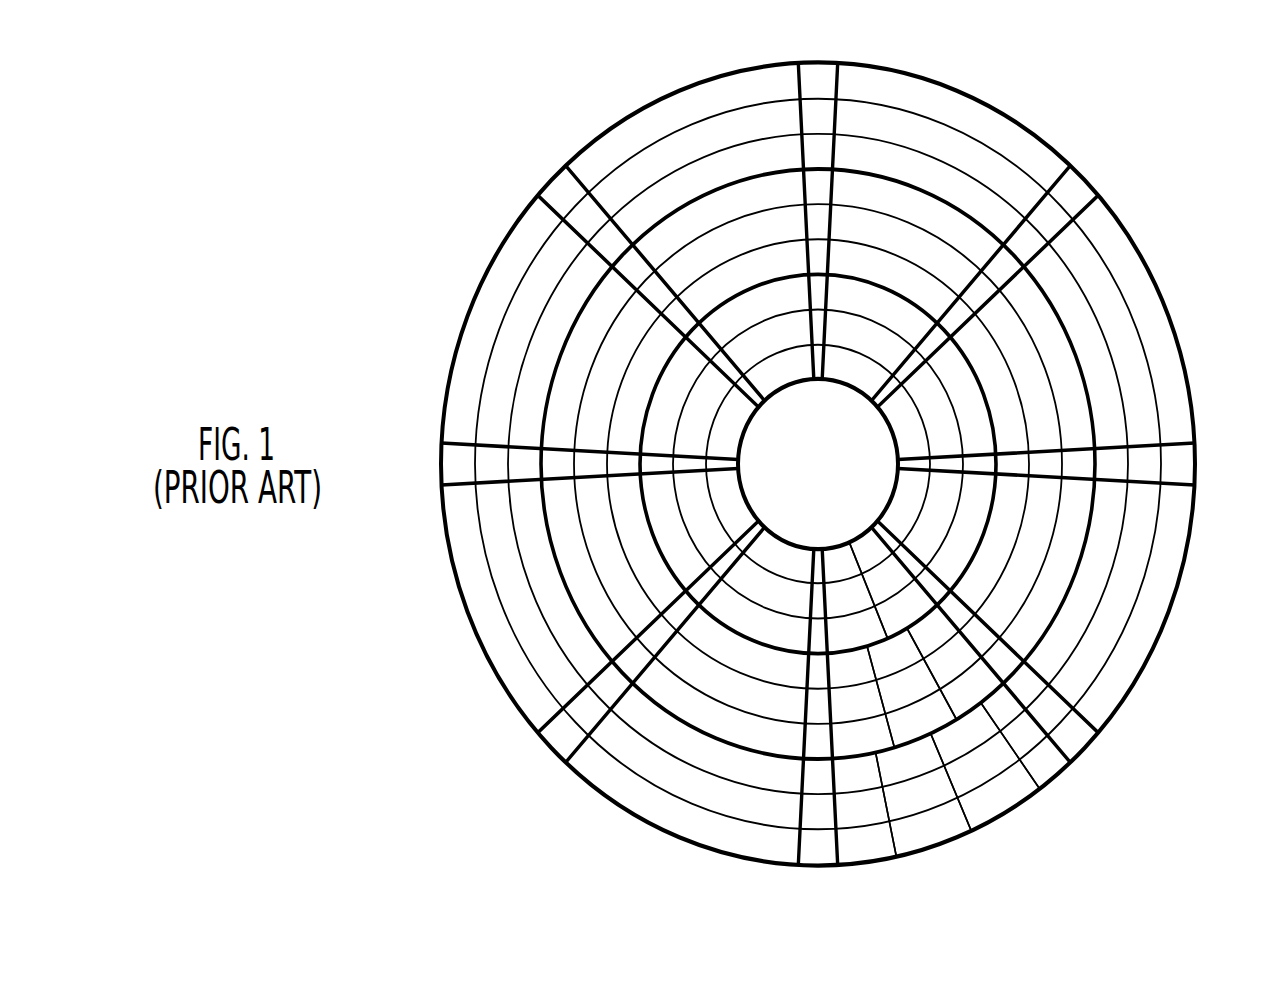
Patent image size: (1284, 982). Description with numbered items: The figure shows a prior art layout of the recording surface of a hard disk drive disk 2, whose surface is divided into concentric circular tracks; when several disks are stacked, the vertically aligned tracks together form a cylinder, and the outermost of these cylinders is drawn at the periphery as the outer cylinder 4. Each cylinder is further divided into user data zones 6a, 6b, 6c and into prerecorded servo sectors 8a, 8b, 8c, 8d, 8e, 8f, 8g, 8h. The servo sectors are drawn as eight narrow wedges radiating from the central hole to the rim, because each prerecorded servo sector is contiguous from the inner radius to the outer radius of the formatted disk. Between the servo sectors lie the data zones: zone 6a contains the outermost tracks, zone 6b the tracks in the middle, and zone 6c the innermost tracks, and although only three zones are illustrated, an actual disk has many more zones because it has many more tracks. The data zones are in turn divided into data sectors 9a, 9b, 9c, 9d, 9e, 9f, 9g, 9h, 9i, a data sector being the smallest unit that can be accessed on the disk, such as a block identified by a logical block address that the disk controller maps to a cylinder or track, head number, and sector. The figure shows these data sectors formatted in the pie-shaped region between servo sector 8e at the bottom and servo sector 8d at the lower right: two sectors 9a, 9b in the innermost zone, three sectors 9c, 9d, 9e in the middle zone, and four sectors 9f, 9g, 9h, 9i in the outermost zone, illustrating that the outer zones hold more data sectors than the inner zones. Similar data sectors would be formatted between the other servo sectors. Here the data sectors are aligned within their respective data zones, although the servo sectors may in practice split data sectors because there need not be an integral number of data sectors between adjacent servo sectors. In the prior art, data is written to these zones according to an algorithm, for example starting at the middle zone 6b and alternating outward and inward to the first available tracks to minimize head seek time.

The disk 2 is at (588, 92).
The outer cylinder 4 is at (700, 80).
The user data zone 6a is at (882, 128).
The user data zone 6b is at (892, 240).
The user data zone 6c is at (873, 345).
The prerecorded servo sector 8a is at (808, 62).
The prerecorded servo sector 8b is at (1088, 178).
The prerecorded servo sector 8c is at (1196, 463).
The prerecorded servo sector 8d is at (1088, 750).
The prerecorded servo sector 8e is at (820, 868).
The prerecorded servo sector 8f is at (550, 750).
The prerecorded servo sector 8g is at (440, 466).
The prerecorded servo sector 8h is at (550, 175).
The data sector 9a is at (861, 613).
The data sector 9b is at (901, 597).
The data sector 9c is at (869, 721).
The data sector 9d is at (919, 710).
The data sector 9e is at (966, 681).
The data sector 9f is at (874, 831).
The data sector 9g is at (931, 817).
The data sector 9h is at (983, 791).
The data sector 9i is at (1032, 755).